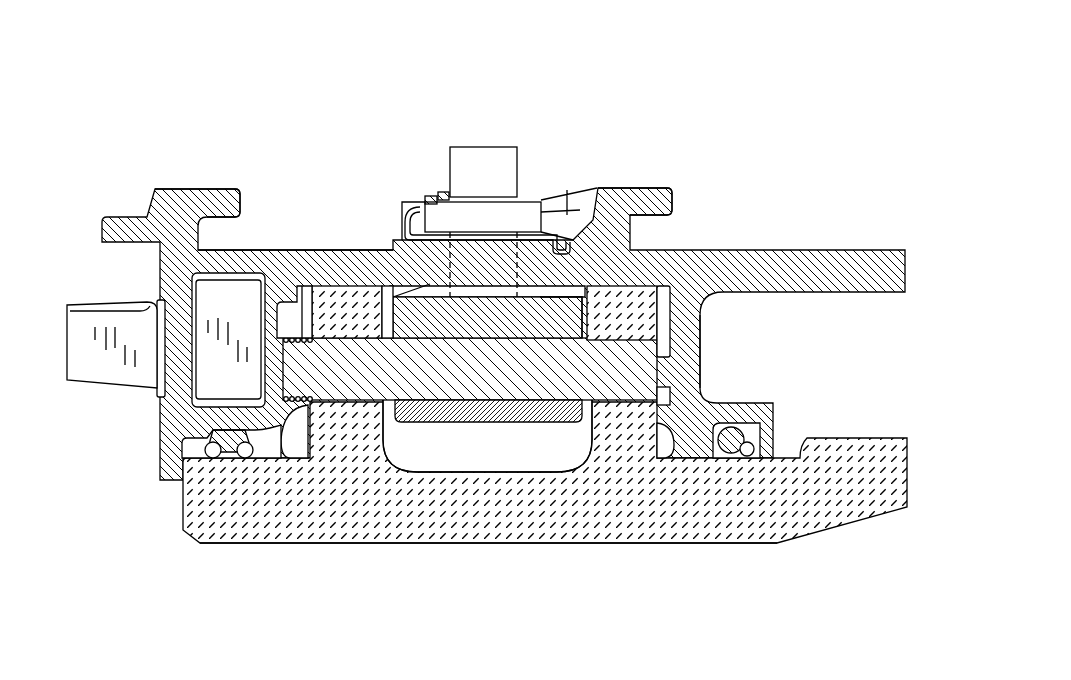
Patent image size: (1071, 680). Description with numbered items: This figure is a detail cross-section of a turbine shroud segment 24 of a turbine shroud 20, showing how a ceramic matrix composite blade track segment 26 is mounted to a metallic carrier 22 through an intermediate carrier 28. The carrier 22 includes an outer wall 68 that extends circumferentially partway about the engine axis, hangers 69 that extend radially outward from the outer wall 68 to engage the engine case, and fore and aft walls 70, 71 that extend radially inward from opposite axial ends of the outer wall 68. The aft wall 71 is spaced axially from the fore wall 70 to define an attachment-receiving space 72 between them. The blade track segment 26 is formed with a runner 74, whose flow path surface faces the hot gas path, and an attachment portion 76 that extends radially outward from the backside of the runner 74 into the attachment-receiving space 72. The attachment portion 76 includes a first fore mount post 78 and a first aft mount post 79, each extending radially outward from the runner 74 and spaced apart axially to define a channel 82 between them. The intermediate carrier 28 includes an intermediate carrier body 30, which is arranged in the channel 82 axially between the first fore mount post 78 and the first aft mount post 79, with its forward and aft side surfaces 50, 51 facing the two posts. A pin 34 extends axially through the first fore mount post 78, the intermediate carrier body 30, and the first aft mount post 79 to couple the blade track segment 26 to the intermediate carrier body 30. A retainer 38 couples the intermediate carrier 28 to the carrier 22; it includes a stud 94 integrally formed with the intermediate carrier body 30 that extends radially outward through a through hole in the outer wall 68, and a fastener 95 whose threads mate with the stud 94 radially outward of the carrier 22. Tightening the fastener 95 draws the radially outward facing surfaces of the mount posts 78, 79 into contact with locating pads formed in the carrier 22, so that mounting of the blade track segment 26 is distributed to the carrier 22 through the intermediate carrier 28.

The sensor assembly 20 is at (464, 331).
The carrier 22 is at (503, 275).
The first turbine shroud segment 24 is at (410, 157).
The blade track segment 26 is at (455, 331).
The intermediate carrier 28 is at (583, 89).
The intermediate carrier body 30 is at (470, 251).
The pin 34 is at (567, 310).
The retainer 38 is at (502, 147).
The forward side surface 50 is at (380, 313).
The aft side surface 51 is at (622, 290).
The outer wall 68 is at (338, 245).
The hanger 69 is at (210, 184).
The fore wall 70 is at (150, 280).
The aft wall 71 is at (708, 348).
The attachment-receiving space 72 is at (296, 285).
The runner 74 is at (349, 551).
The attachment portion 76 is at (414, 530).
The first fore mount post 78 is at (393, 423).
The first aft mount post 79 is at (585, 428).
The channel 82 is at (506, 453).
The stud 94 is at (474, 142).
The fastener 95 is at (527, 182).